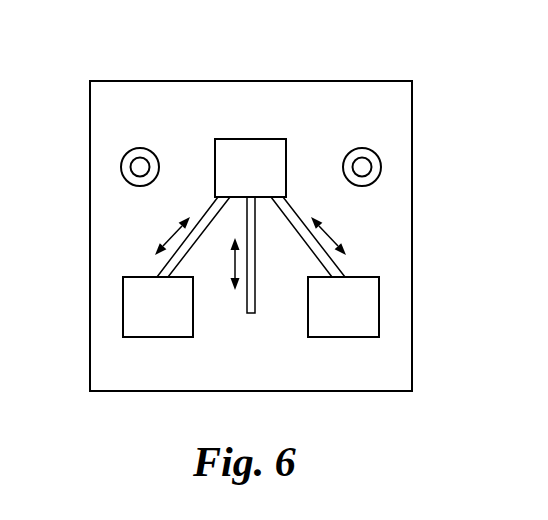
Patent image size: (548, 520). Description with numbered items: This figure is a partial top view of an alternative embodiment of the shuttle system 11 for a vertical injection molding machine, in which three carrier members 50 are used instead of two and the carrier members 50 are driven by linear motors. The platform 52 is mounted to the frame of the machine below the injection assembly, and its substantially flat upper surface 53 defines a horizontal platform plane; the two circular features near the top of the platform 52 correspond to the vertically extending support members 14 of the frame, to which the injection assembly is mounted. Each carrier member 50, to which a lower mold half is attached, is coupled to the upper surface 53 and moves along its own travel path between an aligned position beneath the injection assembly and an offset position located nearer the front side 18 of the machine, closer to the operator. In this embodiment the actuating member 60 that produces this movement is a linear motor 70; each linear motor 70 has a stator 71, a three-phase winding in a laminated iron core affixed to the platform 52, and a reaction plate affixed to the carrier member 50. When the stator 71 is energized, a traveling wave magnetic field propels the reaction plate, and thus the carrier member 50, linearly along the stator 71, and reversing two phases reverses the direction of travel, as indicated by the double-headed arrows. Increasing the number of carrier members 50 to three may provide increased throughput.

The shuttle system 11 is at (474, 78).
The support members 14 is at (382, 167).
The front side 18 is at (152, 391).
The carrier members 50 is at (259, 139).
The platform 52 is at (135, 81).
The upper surface 53 is at (338, 98).
The actuating member 60 is at (384, 226).
The linear motor 70 is at (192, 245).
The stator 71 is at (211, 208).